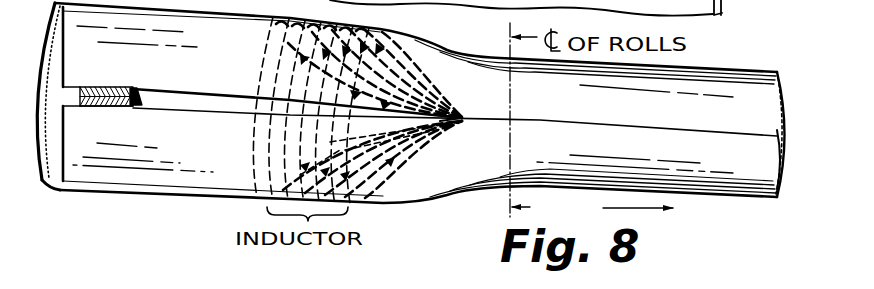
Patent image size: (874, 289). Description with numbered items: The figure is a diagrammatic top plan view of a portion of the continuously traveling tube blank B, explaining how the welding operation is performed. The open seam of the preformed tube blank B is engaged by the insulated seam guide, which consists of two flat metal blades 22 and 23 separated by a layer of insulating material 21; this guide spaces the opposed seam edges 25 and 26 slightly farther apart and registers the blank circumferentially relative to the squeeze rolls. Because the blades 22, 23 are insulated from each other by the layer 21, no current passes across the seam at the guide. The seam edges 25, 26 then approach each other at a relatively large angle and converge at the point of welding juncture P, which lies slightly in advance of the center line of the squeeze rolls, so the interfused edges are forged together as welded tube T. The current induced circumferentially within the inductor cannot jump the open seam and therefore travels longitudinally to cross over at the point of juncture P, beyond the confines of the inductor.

The layer of insulating material 21 is at (137, 98).
The flat metal blade 22 is at (84, 106).
The flat metal blade 23 is at (96, 87).
The seam edge 25 is at (183, 96).
The seam edge 26 is at (185, 108).
The tube blank B is at (148, 187).
The closing point of bore P is at (472, 122).
The reduced tube section T is at (717, 197).